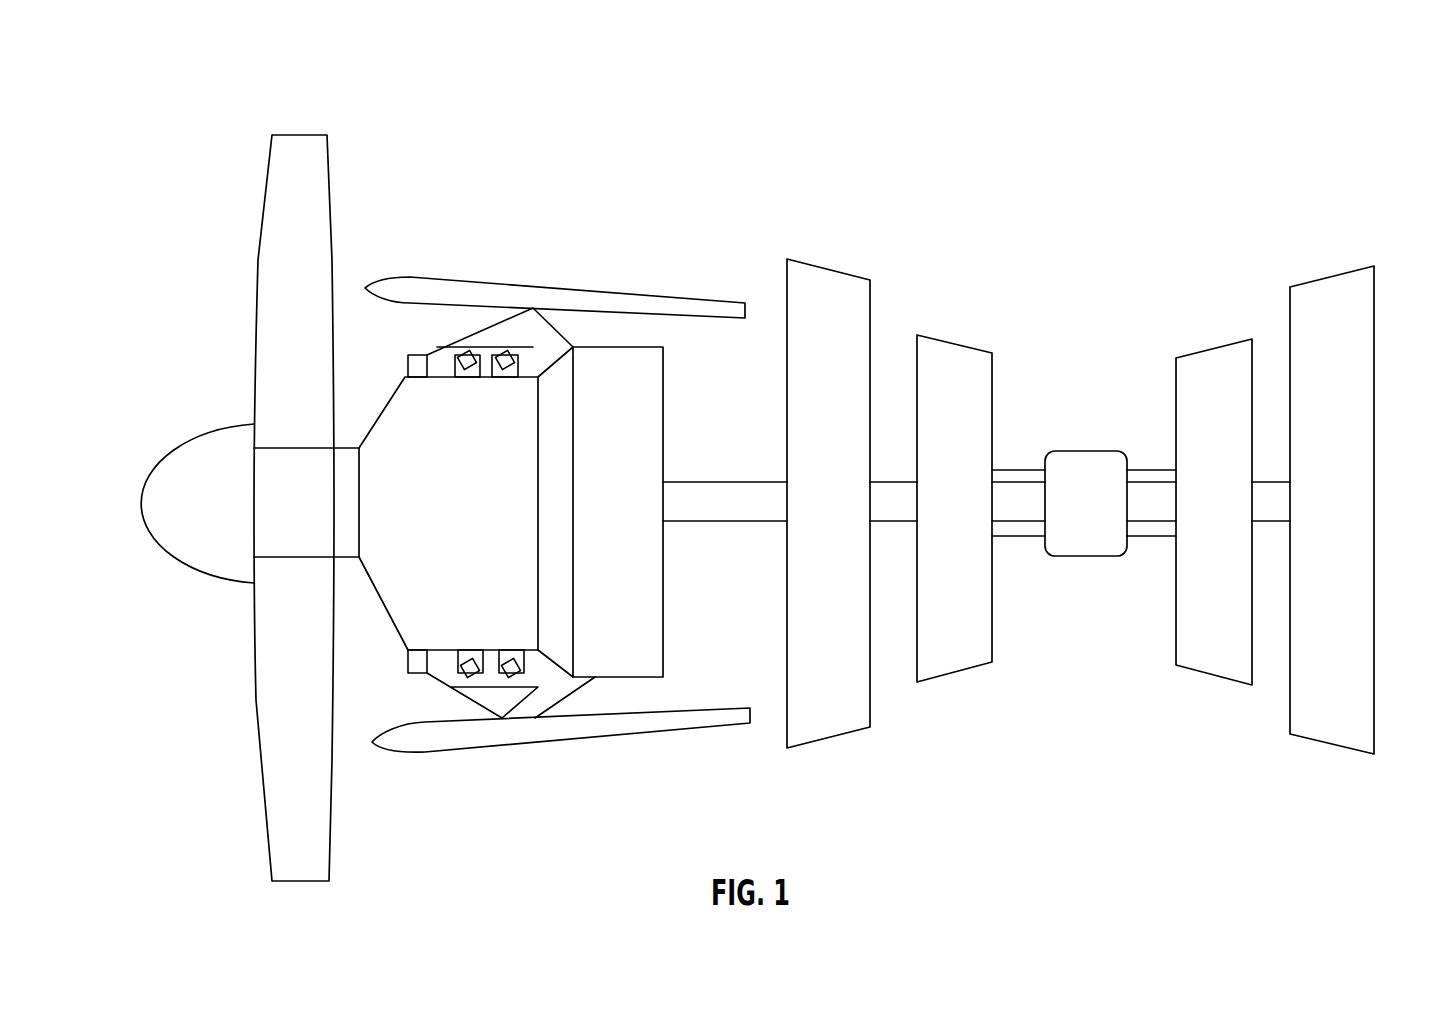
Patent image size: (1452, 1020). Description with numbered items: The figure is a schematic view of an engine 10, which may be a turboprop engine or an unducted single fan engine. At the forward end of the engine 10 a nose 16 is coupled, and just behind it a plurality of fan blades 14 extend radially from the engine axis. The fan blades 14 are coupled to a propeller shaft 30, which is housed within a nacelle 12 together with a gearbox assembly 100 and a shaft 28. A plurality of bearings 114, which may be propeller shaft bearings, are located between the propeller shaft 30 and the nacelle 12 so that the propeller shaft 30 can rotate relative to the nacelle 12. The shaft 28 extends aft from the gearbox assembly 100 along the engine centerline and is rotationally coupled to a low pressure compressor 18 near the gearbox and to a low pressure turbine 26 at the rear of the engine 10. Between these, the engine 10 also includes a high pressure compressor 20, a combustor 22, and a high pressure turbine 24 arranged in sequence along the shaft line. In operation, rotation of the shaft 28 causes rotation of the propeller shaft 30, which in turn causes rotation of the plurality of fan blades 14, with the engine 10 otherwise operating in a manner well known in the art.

The engine 10 is at (168, 83).
The nacelle 12 is at (548, 282).
The fan blades 14 is at (263, 210).
The nose 16 is at (134, 535).
The low pressure compressor 18 is at (830, 270).
The high pressure compressor 20 is at (953, 343).
The combustor 22 is at (1087, 450).
The high pressure turbine 24 is at (1216, 345).
The low pressure turbine 26 is at (1375, 337).
The shaft 28 is at (729, 522).
The propeller shaft 30 is at (383, 617).
The gearbox assembly 100 is at (617, 345).
The bearings 114 is at (501, 341).